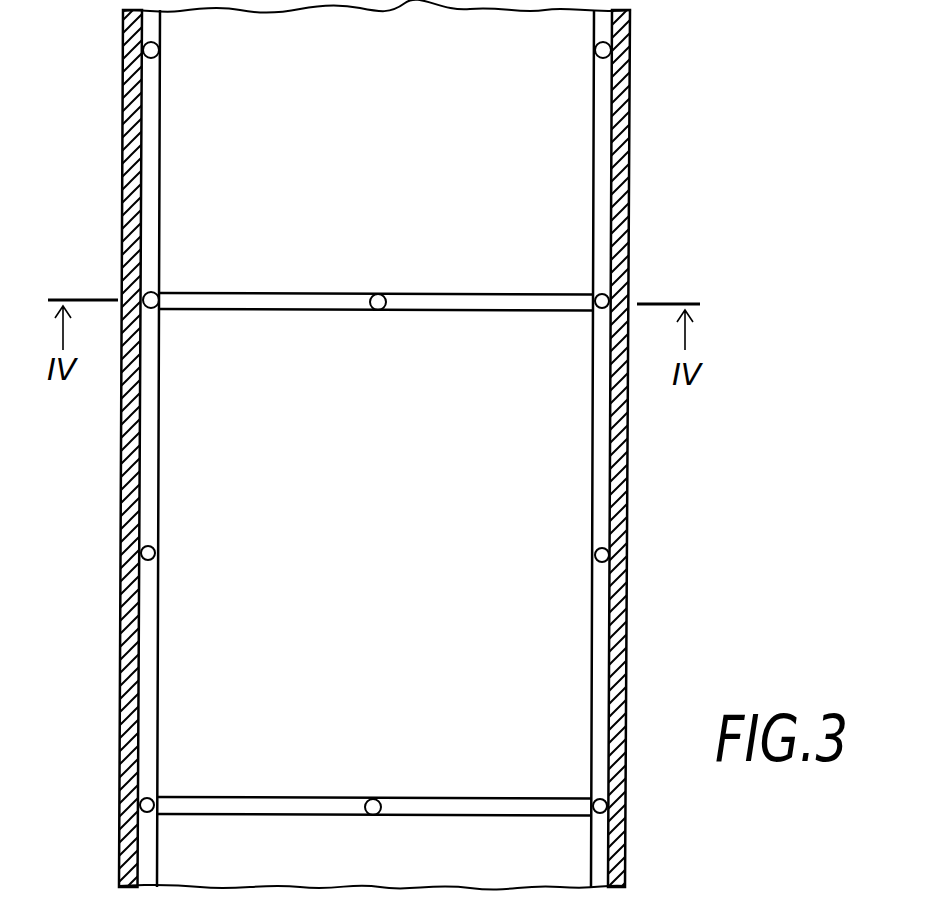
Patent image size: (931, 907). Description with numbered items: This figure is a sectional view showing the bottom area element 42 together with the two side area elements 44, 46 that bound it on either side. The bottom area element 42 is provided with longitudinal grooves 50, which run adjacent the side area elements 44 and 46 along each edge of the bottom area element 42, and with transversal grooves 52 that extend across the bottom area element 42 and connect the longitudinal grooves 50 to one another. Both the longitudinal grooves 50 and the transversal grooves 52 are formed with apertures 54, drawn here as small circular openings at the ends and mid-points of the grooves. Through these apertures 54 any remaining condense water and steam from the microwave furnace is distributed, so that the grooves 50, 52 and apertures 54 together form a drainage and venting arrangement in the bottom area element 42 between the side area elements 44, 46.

The bottom area element 42 is at (545, 641).
The side area element 44 is at (115, 489).
The side area element 46 is at (634, 591).
The longitudinal grooves 50 is at (157, 169).
The transversal grooves 52 is at (437, 302).
The apertures 54 is at (162, 51).